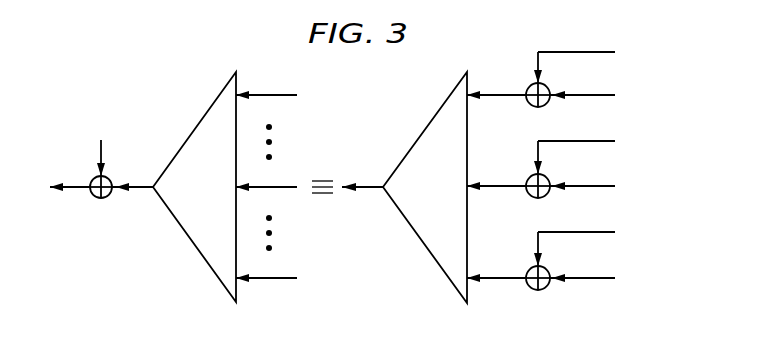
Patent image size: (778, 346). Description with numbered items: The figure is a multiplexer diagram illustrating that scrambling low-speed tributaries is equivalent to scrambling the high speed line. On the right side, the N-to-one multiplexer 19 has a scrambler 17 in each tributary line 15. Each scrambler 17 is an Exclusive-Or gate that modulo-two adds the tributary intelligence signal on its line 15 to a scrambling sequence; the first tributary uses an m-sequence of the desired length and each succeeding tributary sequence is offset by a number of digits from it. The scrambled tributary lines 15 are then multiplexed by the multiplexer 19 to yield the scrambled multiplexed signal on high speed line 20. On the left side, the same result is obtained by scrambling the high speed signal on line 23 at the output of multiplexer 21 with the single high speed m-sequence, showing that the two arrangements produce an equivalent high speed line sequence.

The tributary line 15 is at (595, 98).
The scrambler 17 is at (547, 84).
The N:1 multiplexer 19 is at (438, 108).
The high speed line 20 is at (379, 191).
The multiplexer 21 is at (207, 110).
The high speed line 23 is at (78, 191).